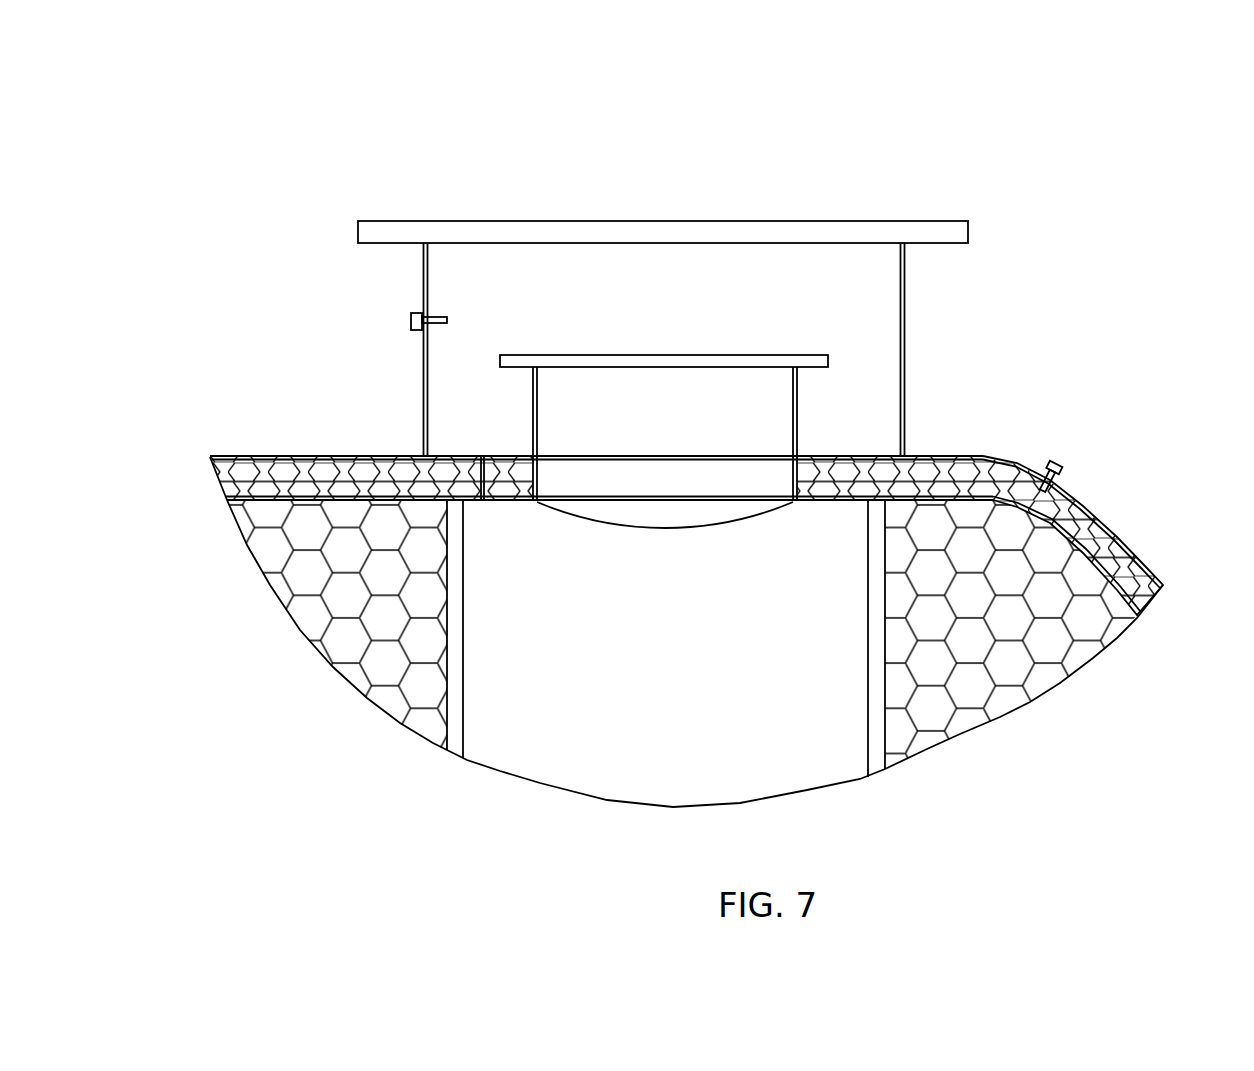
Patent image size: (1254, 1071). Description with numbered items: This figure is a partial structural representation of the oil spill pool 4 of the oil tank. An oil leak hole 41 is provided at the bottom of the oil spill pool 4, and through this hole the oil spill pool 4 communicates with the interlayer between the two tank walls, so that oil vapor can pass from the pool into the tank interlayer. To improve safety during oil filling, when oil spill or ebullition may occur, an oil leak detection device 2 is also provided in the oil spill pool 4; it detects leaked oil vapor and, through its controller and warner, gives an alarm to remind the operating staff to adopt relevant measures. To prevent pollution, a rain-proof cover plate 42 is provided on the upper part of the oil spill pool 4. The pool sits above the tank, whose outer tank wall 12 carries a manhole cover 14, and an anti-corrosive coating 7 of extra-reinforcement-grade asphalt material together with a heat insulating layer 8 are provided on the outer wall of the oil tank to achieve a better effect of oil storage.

The rain-proof cover plate 42 is at (635, 230).
The oil spill pool 4 is at (788, 265).
The oil leak detection device 2 is at (409, 325).
The manhole cover 14 is at (773, 462).
The outer tank wall 12 is at (307, 458).
The anti-corrosive coating 7 is at (1100, 519).
The heat insulating layer 8 is at (1253, 477).
The oil leak hole 41 is at (478, 500).